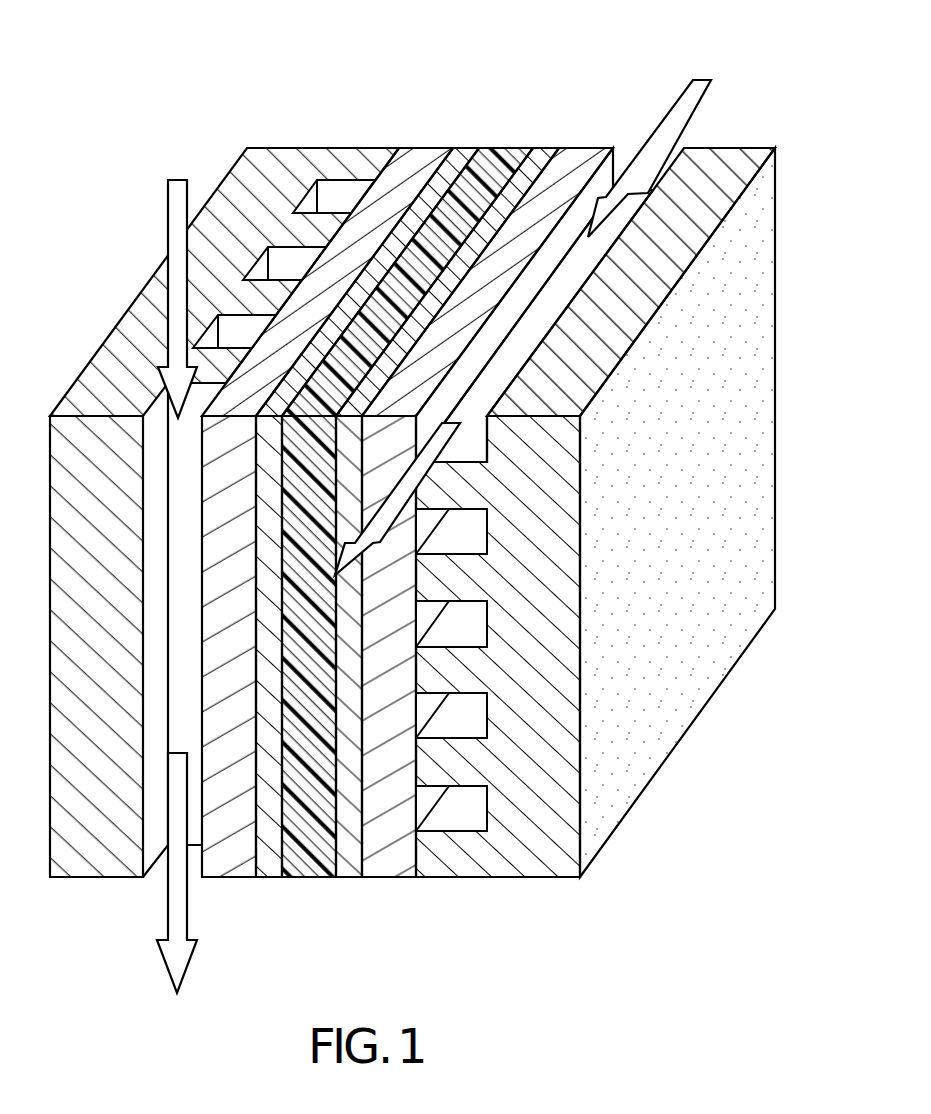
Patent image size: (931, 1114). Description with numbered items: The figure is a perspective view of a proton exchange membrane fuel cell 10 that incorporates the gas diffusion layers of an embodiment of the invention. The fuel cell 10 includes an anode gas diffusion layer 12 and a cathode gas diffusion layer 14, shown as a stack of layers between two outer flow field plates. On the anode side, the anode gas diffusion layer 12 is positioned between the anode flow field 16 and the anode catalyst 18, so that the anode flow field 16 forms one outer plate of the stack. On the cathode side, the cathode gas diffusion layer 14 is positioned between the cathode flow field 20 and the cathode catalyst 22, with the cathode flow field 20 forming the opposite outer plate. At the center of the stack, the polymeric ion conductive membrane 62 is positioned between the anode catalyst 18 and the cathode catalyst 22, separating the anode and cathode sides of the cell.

The proton exchange membrane fuel cell 10 is at (440, 507).
The anode gas diffusion layer 12 is at (427, 155).
The cathode gas diffusion layer 14 is at (584, 155).
The anode flow field 16 is at (285, 155).
The anode catalyst 18 is at (465, 155).
The cathode flow field 20 is at (775, 370).
The cathode catalyst 22 is at (544, 155).
The polymeric ion conductive membrane 62 is at (504, 155).